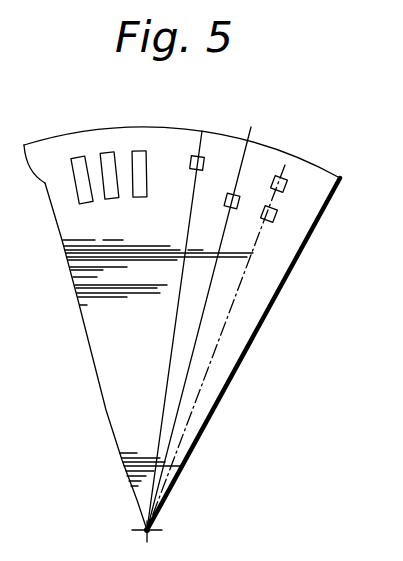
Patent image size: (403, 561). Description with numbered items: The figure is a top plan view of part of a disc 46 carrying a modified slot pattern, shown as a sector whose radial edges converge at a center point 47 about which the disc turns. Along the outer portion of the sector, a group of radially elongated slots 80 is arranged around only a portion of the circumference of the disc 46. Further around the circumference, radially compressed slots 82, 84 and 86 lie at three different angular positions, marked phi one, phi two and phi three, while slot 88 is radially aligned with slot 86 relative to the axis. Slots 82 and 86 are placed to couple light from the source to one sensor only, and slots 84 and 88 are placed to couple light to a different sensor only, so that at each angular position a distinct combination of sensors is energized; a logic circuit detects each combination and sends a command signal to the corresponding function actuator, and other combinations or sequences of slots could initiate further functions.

The disc 46 is at (255, 307).
The pivot point (apex of sector) 47 is at (152, 528).
The radially elongated slots 80 is at (98, 196).
The radially compressed slot 82 is at (190, 157).
The radially compressed slot 84 is at (238, 196).
The radially compressed slot 86 is at (287, 180).
The slot 88 is at (277, 215).